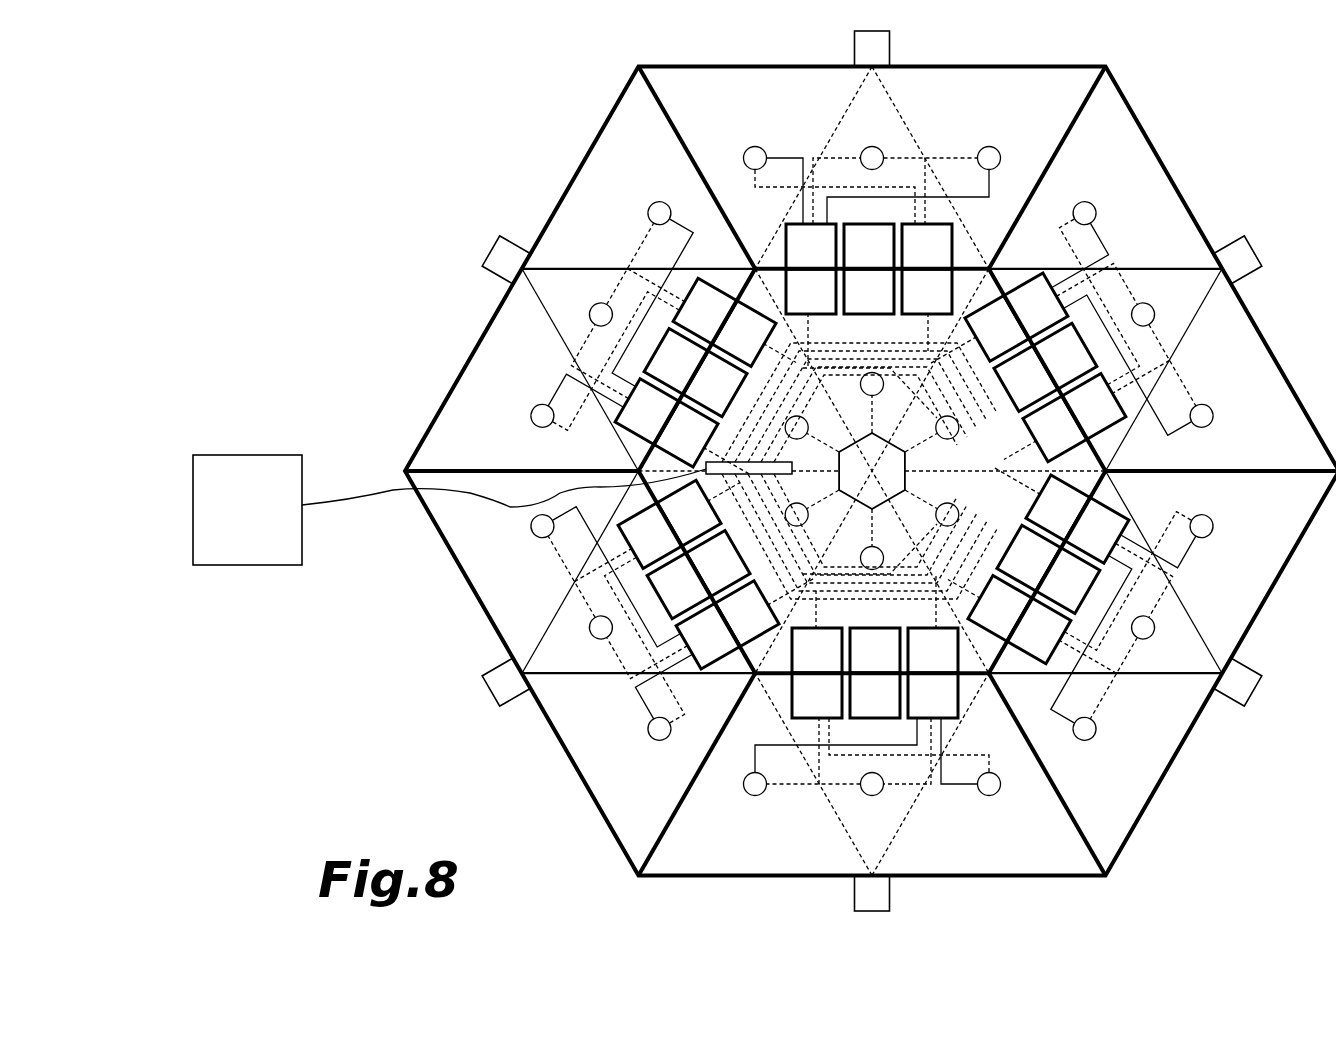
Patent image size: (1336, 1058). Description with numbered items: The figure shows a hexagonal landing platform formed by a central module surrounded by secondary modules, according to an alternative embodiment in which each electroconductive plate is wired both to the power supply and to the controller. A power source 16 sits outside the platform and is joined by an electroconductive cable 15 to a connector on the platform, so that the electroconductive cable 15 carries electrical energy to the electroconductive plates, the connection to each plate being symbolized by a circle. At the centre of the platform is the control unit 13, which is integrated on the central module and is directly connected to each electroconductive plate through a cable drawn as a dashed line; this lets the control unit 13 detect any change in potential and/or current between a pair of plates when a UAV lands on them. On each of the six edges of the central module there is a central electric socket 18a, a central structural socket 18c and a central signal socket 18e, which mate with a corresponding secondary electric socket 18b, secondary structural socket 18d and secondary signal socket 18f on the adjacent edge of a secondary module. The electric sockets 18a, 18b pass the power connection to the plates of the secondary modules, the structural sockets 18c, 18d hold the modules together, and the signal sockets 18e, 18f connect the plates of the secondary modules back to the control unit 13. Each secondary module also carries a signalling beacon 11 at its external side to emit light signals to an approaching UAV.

The signalling beacon 11 is at (513, 683).
The control unit 13 is at (872, 471).
The electroconductive cable 15 is at (362, 492).
The power source 16 is at (247, 510).
The central electric socket 18a is at (872, 471).
The secondary electric socket 18b is at (872, 471).
The central structural socket 18c is at (872, 471).
The secondary structural socket 18d is at (872, 471).
The central signal socket 18e is at (872, 471).
The secondary signal socket 18f is at (872, 471).